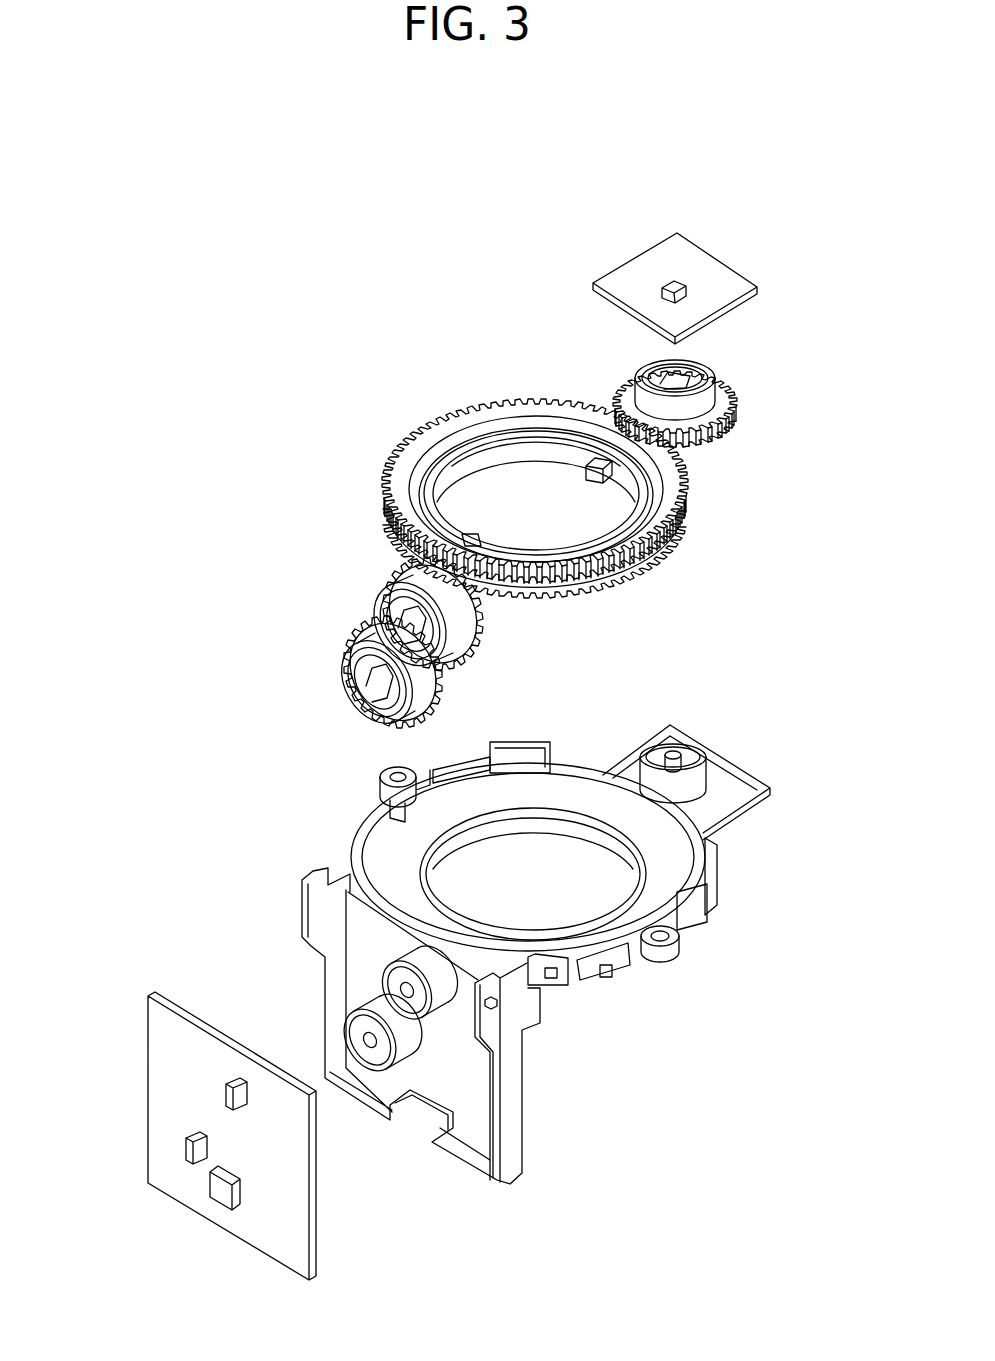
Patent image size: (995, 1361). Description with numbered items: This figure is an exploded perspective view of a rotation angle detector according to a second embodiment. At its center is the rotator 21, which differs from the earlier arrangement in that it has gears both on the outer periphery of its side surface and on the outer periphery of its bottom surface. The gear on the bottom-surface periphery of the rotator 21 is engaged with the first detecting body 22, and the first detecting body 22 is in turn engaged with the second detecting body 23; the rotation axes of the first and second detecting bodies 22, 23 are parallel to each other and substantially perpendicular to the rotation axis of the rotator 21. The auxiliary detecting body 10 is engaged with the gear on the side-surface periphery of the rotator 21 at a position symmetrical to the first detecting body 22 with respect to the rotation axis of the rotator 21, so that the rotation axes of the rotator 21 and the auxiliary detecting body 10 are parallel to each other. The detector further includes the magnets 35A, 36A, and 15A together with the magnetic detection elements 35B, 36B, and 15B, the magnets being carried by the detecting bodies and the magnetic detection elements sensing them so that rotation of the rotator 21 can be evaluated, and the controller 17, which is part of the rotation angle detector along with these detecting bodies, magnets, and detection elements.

The auxiliary detecting body 10 is at (733, 430).
The magnet 15A is at (683, 387).
The magnetic detection element 15B is at (664, 288).
The rotator 21 is at (432, 422).
The first detecting body 22 is at (382, 582).
The second detecting body 23 is at (338, 670).
The magnet 35A is at (403, 628).
The magnet 36A is at (367, 688).
The magnetic detection element 35B is at (222, 1093).
The magnetic detection element 36B is at (190, 1153).
The controller 17 is at (225, 1190).